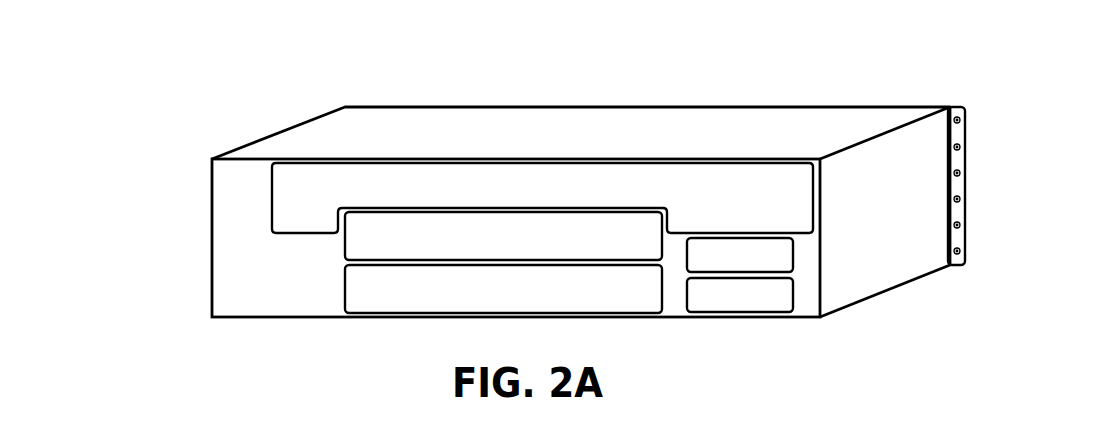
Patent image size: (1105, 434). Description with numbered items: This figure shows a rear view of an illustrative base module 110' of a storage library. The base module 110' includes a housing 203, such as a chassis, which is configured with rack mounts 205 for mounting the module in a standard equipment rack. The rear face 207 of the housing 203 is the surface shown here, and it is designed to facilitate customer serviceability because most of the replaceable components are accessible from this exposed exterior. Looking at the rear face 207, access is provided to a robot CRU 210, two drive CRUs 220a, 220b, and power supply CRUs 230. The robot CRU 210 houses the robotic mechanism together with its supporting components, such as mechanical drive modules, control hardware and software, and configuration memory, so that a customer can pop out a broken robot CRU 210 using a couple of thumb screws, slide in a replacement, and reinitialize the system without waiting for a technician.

The base module 110' is at (636, 203).
The housing 203 is at (307, 121).
The rack mounts 205 is at (965, 153).
The rear face 207 is at (287, 302).
The robot CRU 210 is at (542, 198).
The drive CRU 220a is at (503, 236).
The drive CRU 220b is at (503, 289).
The power supply CRUs 230 is at (793, 293).